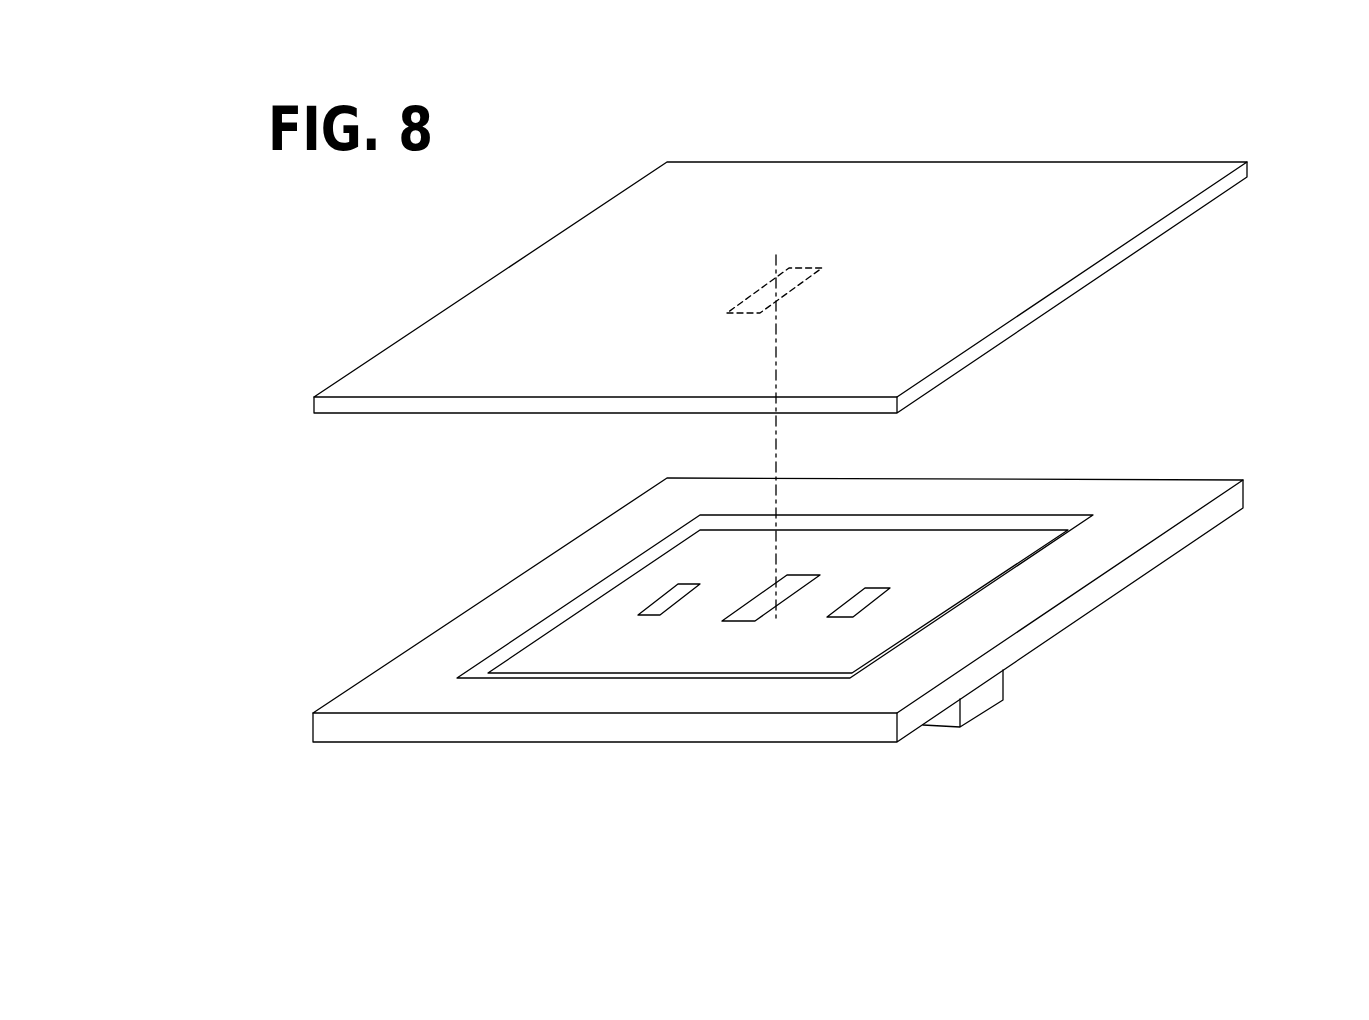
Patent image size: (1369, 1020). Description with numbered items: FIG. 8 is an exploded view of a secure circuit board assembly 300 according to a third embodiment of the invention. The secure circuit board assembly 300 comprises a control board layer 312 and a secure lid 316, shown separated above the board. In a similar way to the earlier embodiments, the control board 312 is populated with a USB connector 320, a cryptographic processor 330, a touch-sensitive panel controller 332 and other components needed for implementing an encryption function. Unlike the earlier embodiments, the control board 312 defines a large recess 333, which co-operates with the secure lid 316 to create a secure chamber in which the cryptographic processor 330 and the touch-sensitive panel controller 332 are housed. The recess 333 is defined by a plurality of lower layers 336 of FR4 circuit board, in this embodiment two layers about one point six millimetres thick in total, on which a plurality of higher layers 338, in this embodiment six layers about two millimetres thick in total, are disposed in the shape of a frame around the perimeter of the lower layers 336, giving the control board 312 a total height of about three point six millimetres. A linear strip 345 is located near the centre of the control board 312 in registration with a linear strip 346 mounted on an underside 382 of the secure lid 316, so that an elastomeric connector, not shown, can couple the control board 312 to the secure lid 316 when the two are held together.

The secure circuit board assembly 300 is at (222, 700).
The control board layer 312 is at (365, 665).
The secure lid 316 is at (390, 338).
The USB connector 320 is at (987, 698).
The cryptographic processor 330 is at (873, 595).
The touch-sensitive panel controller 332 is at (668, 593).
The recess 333 is at (853, 552).
The lower layers 336 is at (1205, 527).
The higher layers 338 is at (1213, 485).
The linear strip 345 is at (757, 610).
The linear strip 346 is at (797, 270).
The underside 382 is at (1070, 295).